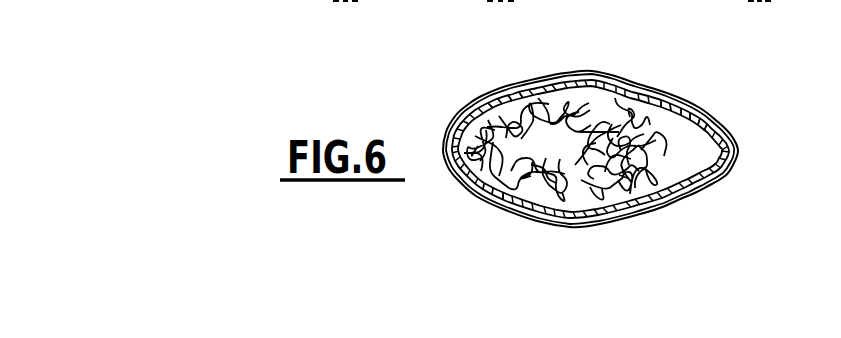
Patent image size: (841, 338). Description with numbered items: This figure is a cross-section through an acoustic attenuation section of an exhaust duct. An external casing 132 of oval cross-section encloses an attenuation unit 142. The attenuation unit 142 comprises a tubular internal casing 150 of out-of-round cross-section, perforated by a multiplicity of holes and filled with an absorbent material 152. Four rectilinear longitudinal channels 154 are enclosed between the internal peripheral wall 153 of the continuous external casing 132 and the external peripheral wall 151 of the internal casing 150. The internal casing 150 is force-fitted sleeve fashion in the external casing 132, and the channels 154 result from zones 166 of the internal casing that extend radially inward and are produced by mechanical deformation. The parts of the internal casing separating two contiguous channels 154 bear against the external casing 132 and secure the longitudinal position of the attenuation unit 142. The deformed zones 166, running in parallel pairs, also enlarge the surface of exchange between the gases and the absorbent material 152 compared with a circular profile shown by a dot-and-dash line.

The tubular internal casing 150 is at (677, 196).
The internal peripheral wall 153 is at (650, 207).
The rectilinear longitudinal channels 154 is at (495, 102).
The external peripheral wall 151 is at (521, 193).
The deformed zones 166 is at (510, 96).
The external casing 132 is at (698, 121).
The attenuation unit 142 is at (705, 122).
The absorbent material 152 is at (620, 122).